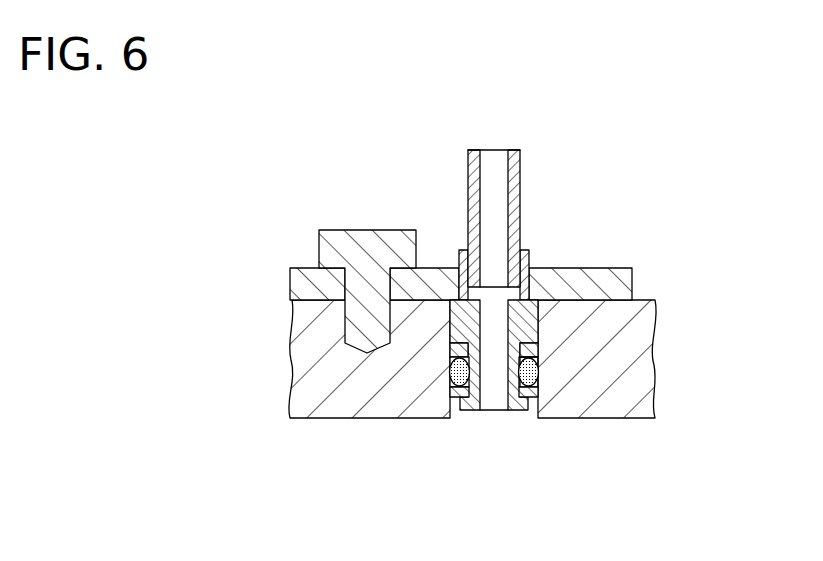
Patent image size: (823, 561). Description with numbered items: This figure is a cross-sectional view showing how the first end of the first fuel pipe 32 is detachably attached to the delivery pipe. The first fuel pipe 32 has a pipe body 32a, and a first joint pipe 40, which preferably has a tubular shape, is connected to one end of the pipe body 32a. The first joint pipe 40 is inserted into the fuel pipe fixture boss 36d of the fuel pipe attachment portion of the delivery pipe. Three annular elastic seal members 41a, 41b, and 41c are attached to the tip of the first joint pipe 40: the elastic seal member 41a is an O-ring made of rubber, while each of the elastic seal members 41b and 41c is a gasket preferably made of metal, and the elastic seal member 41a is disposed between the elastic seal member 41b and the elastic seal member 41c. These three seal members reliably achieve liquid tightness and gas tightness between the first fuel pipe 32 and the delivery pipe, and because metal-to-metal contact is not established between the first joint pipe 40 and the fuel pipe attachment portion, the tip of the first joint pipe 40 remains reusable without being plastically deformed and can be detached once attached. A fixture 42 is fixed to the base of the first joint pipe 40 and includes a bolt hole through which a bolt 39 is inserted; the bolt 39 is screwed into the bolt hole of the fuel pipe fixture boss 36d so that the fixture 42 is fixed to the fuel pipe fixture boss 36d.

The first fuel pipe 32 is at (592, 183).
The pipe body 32a is at (516, 178).
The bolt 39 is at (354, 238).
The fixture 42 is at (617, 275).
The fuel pipe fixture boss 36d is at (353, 408).
The first joint pipe 40 is at (518, 403).
The elastic seal member 41a is at (540, 372).
The elastic seal member 41b is at (538, 353).
The elastic seal member 41c is at (540, 398).